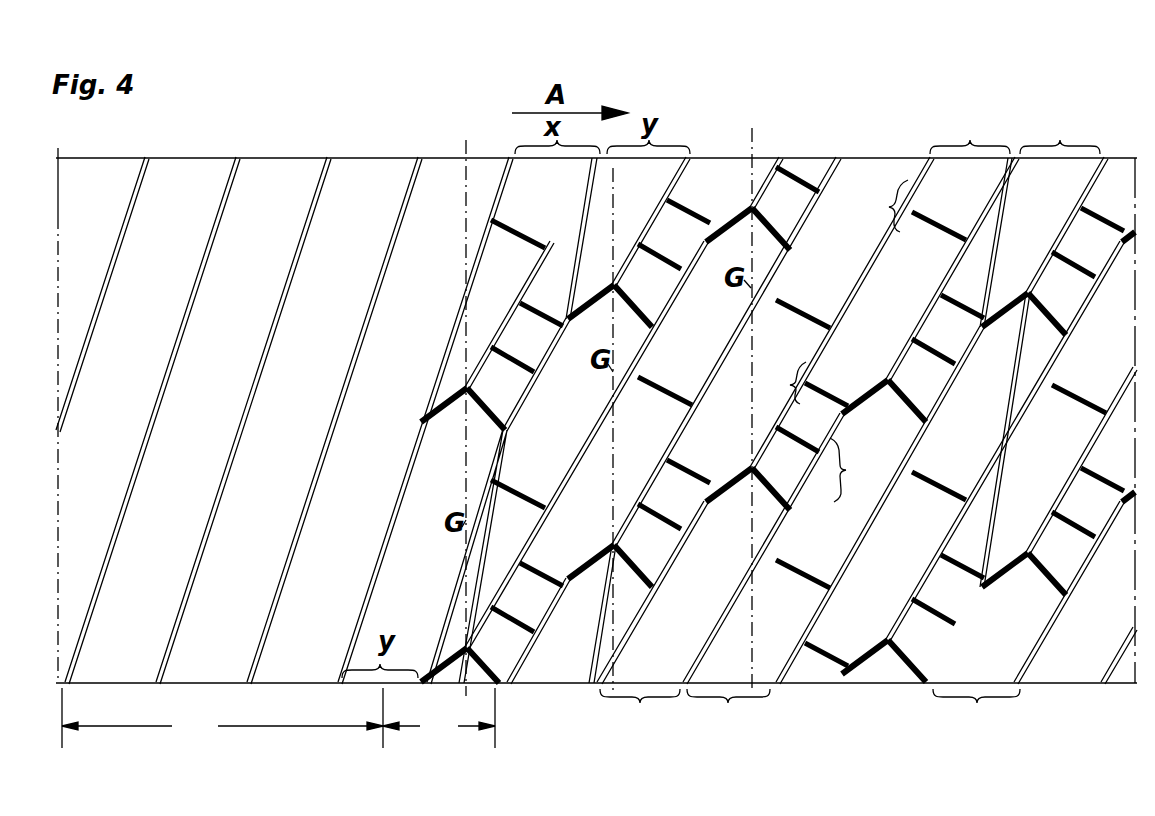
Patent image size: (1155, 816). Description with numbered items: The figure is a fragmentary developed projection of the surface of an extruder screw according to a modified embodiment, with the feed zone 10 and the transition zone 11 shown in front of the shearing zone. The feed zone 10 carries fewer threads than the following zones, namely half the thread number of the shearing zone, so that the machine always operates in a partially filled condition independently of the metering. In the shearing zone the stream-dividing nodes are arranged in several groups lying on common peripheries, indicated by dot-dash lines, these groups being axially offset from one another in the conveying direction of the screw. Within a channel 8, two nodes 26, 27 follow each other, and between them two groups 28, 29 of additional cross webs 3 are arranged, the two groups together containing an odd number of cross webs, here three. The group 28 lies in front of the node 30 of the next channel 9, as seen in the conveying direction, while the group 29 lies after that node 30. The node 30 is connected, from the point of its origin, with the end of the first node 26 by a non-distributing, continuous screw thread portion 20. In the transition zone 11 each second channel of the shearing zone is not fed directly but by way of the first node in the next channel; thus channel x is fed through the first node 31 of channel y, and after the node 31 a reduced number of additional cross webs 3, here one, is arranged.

The cross webs 3 is at (516, 228).
The channel 8 is at (810, 427).
The next channel 9 is at (893, 427).
The feed zone 10 is at (222, 718).
The transition zone 11 is at (439, 718).
The continuous screw thread portion 20 is at (857, 470).
The first node 26 is at (748, 482).
The second node 27 is at (1045, 580).
The first group of additional cross webs 28 is at (779, 383).
The second group of additional cross webs 29 is at (880, 206).
The node 30 is at (887, 378).
The first node 31 is at (487, 412).